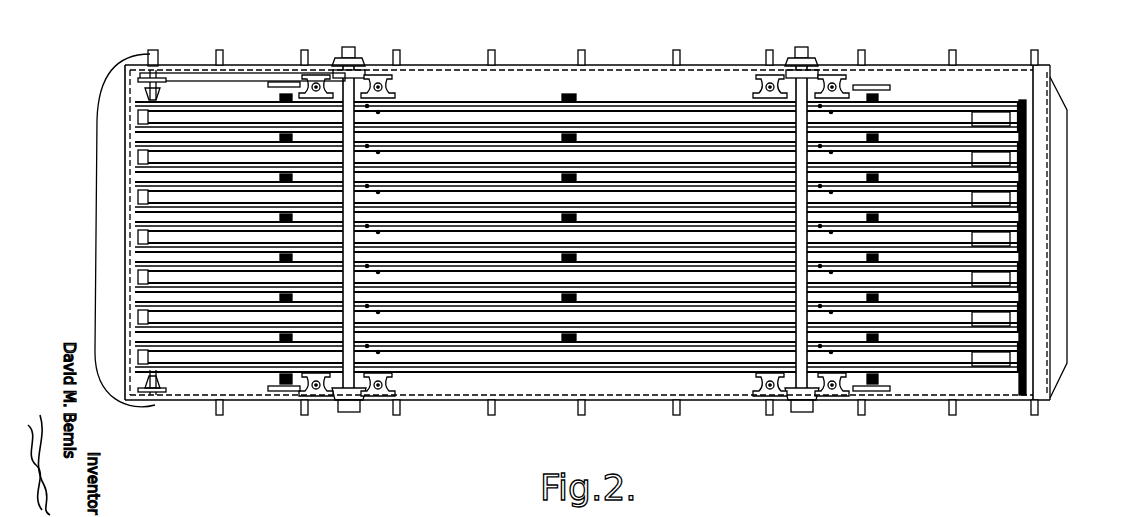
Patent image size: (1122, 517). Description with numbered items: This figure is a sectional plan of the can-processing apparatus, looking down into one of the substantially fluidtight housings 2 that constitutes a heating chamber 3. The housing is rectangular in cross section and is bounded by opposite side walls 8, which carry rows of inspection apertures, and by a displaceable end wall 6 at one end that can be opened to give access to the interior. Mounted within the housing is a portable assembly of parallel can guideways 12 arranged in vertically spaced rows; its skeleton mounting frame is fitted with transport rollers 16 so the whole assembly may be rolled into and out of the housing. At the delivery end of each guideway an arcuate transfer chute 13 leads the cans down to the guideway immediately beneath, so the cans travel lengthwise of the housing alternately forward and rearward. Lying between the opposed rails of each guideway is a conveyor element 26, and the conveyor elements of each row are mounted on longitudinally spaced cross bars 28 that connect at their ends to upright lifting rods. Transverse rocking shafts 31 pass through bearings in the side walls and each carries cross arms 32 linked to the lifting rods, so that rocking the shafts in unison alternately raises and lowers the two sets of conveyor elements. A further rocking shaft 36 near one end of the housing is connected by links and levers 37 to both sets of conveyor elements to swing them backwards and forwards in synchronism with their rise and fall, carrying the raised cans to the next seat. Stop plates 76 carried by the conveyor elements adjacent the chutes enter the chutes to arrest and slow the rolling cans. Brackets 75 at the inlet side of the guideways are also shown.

The fluidtight housing 2 is at (553, 64).
The heating chamber 3 is at (465, 402).
The end wall 6 is at (1050, 258).
The side wall 8 is at (628, 66).
The can guideway 12 is at (932, 92).
The transfer chute 13 is at (1002, 92).
The transport roller 16 is at (862, 84).
The conveyor element 26 is at (447, 160).
The cross bar 28 is at (380, 137).
The rocking shaft 31 is at (346, 48).
The cross arm 32 is at (333, 68).
The rocking shaft 36 is at (153, 50).
The links and levers 37 is at (233, 75).
The brackets 75 is at (140, 120).
The stop plate 76 is at (1005, 160).